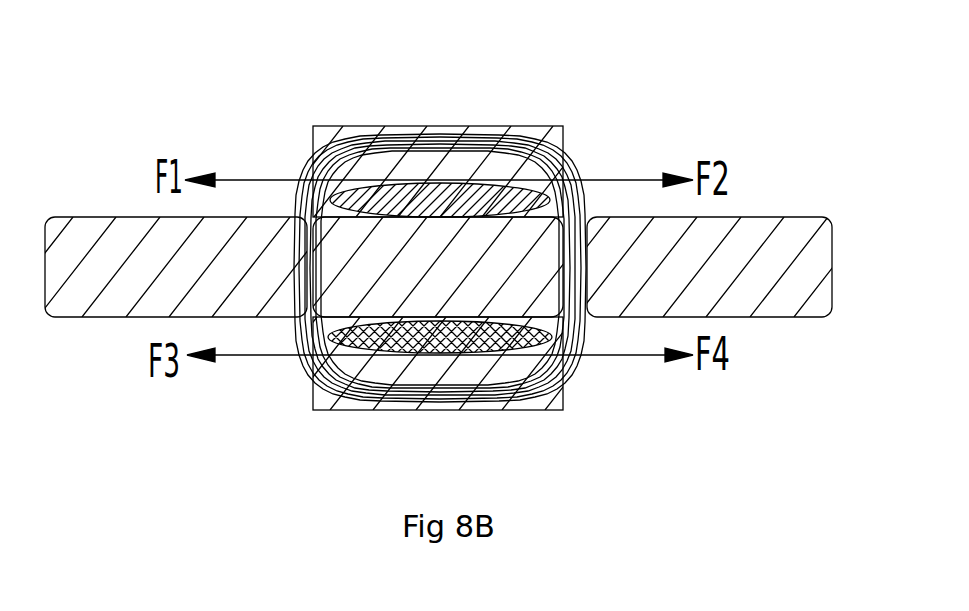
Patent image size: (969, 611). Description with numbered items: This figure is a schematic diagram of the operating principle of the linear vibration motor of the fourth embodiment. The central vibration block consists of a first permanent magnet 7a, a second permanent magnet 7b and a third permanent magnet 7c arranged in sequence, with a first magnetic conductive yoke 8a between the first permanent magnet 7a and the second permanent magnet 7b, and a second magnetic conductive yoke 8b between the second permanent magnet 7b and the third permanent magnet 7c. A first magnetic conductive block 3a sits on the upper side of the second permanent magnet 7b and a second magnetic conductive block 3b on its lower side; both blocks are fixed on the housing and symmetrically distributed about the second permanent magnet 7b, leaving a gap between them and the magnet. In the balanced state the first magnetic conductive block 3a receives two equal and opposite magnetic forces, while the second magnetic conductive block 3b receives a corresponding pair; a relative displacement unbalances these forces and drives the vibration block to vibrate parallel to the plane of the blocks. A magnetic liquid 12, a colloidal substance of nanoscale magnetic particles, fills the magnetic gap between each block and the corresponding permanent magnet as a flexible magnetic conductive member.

The first magnetic conductive block 3a is at (426, 112).
The second magnetic conductive block 3b is at (431, 410).
The first permanent magnet 7a is at (167, 187).
The second permanent magnet 7b is at (431, 161).
The third permanent magnet 7c is at (702, 187).
The first magnetic conductive yoke 8a is at (335, 229).
The second magnetic conductive yoke 8b is at (553, 228).
The magnetic liquid 12 is at (440, 182).